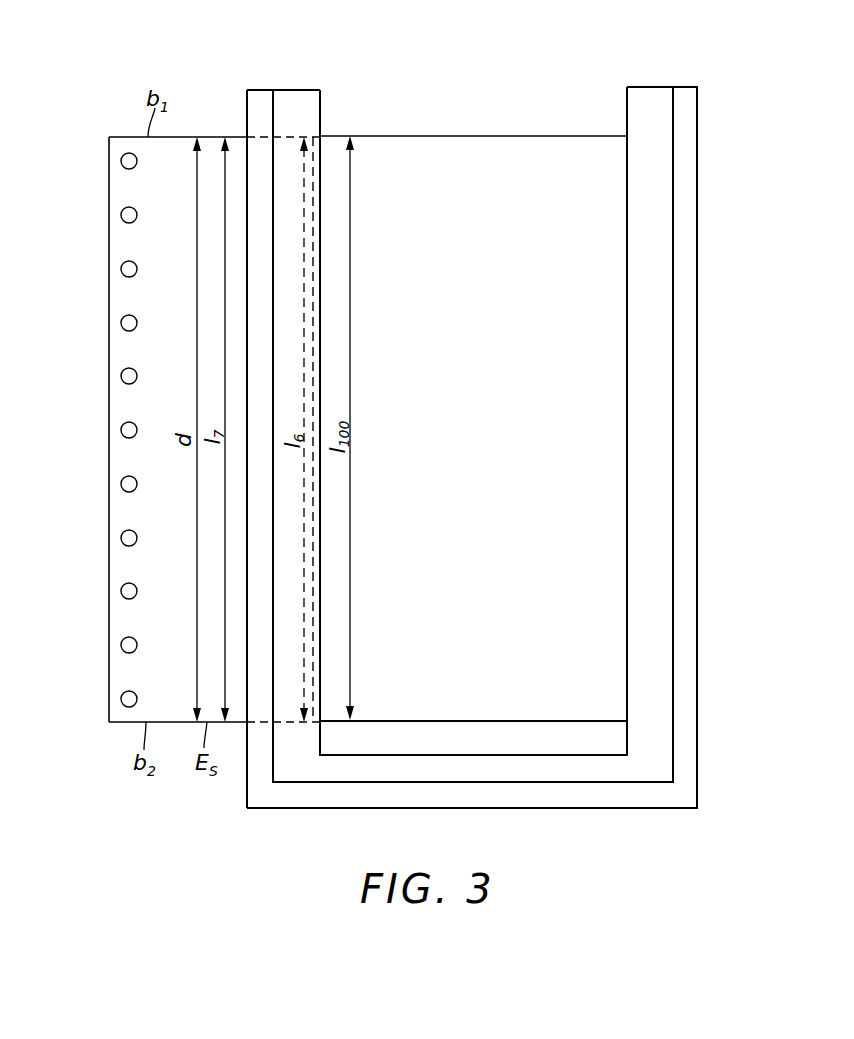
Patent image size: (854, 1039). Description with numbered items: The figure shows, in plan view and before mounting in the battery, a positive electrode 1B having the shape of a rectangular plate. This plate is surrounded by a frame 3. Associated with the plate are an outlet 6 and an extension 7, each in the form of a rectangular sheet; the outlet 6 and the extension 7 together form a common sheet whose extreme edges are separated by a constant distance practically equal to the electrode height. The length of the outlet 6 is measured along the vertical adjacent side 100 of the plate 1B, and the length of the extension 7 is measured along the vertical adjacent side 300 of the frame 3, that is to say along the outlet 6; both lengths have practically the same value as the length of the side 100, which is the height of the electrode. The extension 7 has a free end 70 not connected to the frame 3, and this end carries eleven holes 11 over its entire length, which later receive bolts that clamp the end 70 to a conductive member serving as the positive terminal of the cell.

The frame 3 is at (697, 288).
The outlet 6 is at (297, 135).
The extension 7 is at (186, 137).
The holes 11 is at (137, 214).
The free end 70 is at (109, 150).
The vertical adjacent side 100 is at (313, 287).
The vertical adjacent side 300 is at (247, 348).
The positive electrode 1B is at (443, 136).